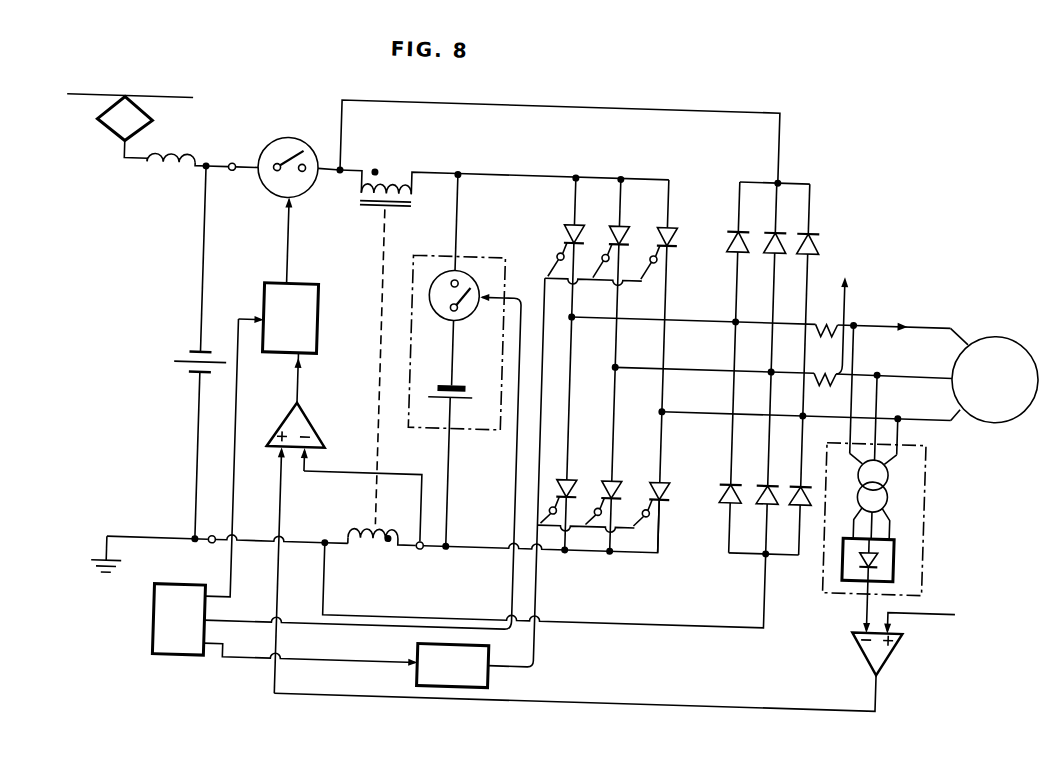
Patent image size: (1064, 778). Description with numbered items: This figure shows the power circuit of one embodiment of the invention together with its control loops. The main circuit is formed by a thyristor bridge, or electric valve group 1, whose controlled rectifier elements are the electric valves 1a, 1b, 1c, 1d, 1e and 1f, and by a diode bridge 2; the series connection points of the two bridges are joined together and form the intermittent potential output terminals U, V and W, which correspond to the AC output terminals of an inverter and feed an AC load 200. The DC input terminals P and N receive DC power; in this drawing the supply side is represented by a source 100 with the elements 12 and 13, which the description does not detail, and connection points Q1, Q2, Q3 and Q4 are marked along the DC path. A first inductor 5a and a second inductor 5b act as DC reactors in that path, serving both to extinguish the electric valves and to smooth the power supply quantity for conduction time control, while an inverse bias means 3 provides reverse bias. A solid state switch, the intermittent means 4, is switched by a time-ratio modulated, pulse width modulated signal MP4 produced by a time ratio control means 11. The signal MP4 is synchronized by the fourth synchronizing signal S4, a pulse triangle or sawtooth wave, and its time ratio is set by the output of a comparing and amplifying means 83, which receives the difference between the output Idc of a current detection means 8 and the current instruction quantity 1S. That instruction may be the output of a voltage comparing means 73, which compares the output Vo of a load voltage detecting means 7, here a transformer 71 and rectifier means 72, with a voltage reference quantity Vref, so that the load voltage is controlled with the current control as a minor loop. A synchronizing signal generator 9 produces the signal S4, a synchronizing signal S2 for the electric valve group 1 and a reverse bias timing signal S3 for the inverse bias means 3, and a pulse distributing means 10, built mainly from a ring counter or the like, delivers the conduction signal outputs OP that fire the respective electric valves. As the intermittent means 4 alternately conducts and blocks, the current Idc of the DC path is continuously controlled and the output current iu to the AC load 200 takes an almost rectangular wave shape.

The thyristor bridge 1 is at (640, 159).
The electric valve 1a is at (566, 227).
The electric valve 1b is at (567, 474).
The electric valve 1c is at (611, 227).
The electric valve 1d is at (613, 473).
The electric valve 1e is at (659, 227).
The electric valve 1f is at (663, 472).
The diode bridge 2 is at (827, 160).
The inverse bias means 3 is at (490, 462).
The solid state switch 4 is at (287, 139).
The first inductor 5a is at (388, 169).
The second inductor 5b is at (377, 542).
The load voltage detecting means 7 is at (894, 461).
The transformer 71 is at (896, 462).
The rectifier means 72 is at (906, 543).
The voltage comparing means 73 is at (903, 637).
The current detection means 8 is at (431, 549).
The synchronizing signal generator 9 is at (168, 640).
The pulse distributing means 10 is at (486, 670).
The time ratio control means 11 is at (322, 321).
The reactor 12 is at (164, 172).
The battery 13 is at (181, 372).
The comparing means 83 is at (318, 421).
The power source 100 is at (99, 132).
The AC load 200 is at (1020, 376).
The DC input terminal P is at (232, 174).
The DC input terminal N is at (222, 547).
The node Q1 is at (338, 176).
The node Q2 is at (331, 546).
The node Q3 is at (523, 162).
The node Q4 is at (489, 542).
The synchronizing signal S2 is at (396, 657).
The reverse bias timing signal S3 is at (526, 294).
The fourth synchronizing signal S4 is at (234, 443).
The time-ratio modulated signal MP4 is at (289, 246).
The current detection output Idc is at (339, 473).
The current instruction quantity 1S is at (292, 490).
The intermittent potential output terminal U is at (706, 309).
The intermittent potential output terminal V is at (709, 359).
The intermittent potential output terminal W is at (699, 402).
The phase current iu is at (905, 313).
The load voltage detecting output Vo is at (875, 593).
The voltage reference quantity Vref is at (944, 620).
The pulse distributing means outputs OP is at (586, 672).